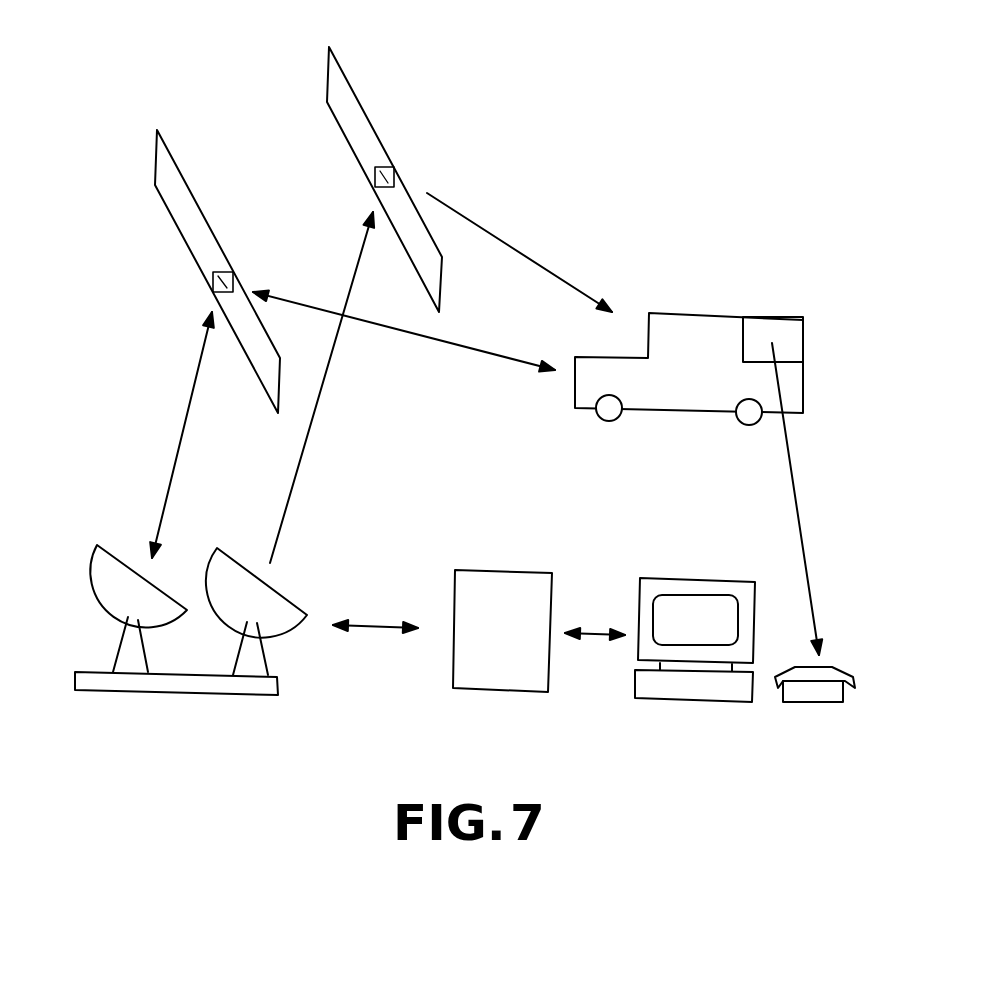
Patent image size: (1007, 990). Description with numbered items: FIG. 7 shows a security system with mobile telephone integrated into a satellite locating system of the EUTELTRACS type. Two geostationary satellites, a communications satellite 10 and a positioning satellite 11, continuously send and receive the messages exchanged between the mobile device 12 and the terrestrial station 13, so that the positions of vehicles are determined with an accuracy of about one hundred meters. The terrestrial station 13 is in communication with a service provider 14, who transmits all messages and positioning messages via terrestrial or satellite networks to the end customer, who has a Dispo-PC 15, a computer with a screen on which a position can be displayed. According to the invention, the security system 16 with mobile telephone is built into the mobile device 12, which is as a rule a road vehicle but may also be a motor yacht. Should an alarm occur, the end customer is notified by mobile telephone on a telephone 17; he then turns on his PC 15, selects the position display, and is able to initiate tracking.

The communications satellite 10 is at (213, 275).
The positioning satellite 11 is at (375, 167).
The mobile device 12 is at (692, 335).
The terrestrial station 13 is at (95, 667).
The service provider 14 is at (502, 597).
The Dispo-PC 15 is at (688, 603).
The security system 16 is at (787, 330).
The telephone 17 is at (817, 690).